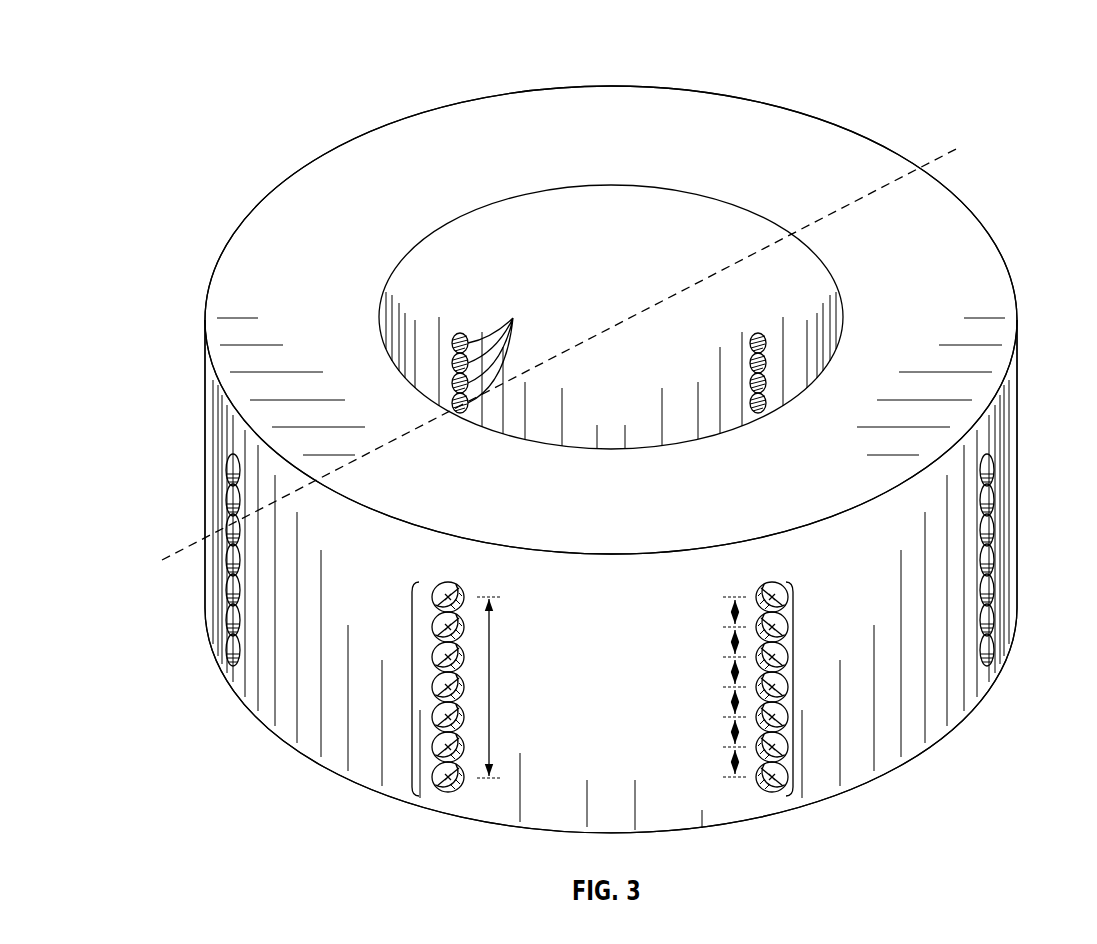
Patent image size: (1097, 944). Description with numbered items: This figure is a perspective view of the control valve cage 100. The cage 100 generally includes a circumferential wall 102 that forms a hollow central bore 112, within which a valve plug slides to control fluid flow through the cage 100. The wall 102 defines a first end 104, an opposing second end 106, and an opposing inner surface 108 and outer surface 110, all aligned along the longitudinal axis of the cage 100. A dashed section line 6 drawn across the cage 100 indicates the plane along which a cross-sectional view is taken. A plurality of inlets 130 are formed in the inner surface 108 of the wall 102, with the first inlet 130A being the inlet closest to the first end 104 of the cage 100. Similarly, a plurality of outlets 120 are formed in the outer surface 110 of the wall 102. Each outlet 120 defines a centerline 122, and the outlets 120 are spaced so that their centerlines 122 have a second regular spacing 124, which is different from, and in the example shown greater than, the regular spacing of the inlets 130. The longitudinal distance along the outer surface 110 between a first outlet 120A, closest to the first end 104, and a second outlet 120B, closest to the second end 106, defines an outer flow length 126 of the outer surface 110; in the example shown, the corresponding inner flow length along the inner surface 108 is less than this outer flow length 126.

The cage 100 is at (342, 85).
The circumferential wall 102 is at (963, 260).
The first end 104 is at (477, 120).
The second end 106 is at (723, 830).
The inner surface 108 is at (550, 229).
The outer surface 110 is at (1020, 523).
The hollow central bore 112 is at (632, 297).
The outlets 120 is at (412, 688).
The first outlet 120A is at (451, 582).
The second outlet 120B is at (462, 787).
The centerline 122 is at (773, 594).
The second regular spacing 124 is at (723, 762).
The outer flow length 126 is at (489, 690).
The inlets 130 is at (505, 358).
The first inlet 130A is at (758, 333).
The section line 6- 6 is at (162, 560).